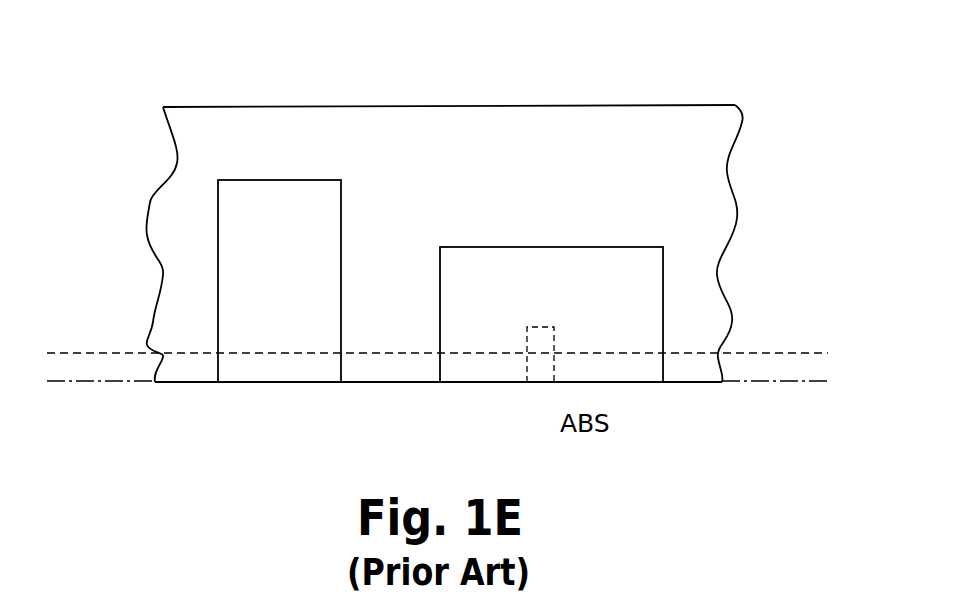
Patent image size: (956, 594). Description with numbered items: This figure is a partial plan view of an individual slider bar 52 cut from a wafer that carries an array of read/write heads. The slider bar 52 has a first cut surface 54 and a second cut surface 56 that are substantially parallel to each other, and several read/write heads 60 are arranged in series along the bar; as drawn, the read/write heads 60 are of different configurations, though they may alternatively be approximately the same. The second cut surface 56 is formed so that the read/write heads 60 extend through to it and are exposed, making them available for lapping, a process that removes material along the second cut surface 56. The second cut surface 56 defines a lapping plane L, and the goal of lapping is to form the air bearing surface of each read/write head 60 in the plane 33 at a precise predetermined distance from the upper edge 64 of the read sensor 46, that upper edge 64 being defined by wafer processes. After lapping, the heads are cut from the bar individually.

The slider bar 52 is at (596, 66).
The first cut surface 54 is at (465, 105).
The second cut surface 56 is at (375, 382).
The read/write head 60 is at (295, 185).
The upper edge 64 is at (546, 326).
The read sensor 46 is at (577, 402).
The plane 33 is at (98, 353).
The lapping plane L is at (120, 382).